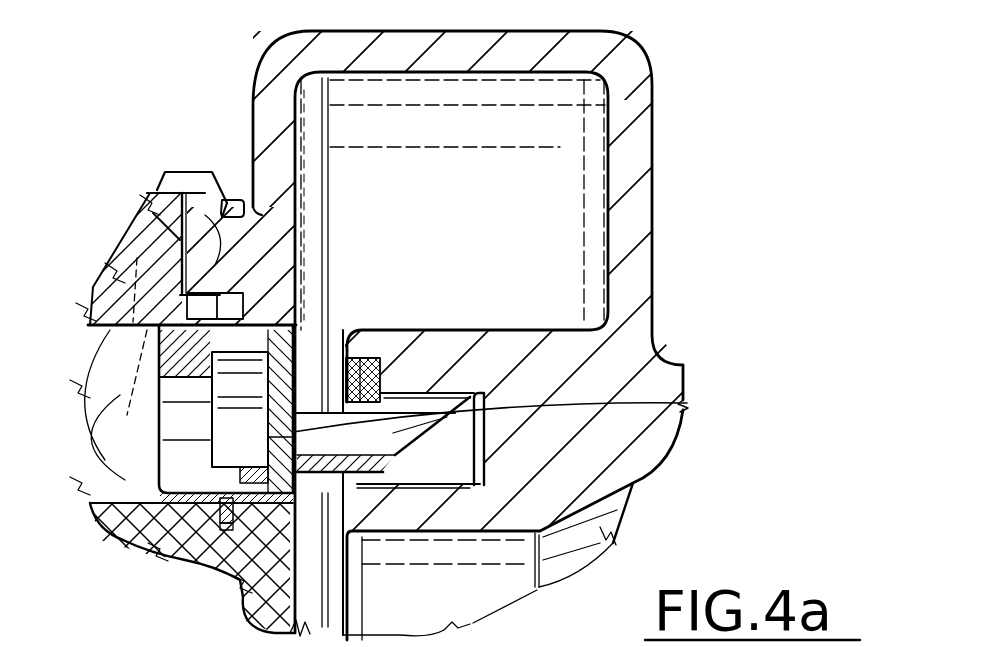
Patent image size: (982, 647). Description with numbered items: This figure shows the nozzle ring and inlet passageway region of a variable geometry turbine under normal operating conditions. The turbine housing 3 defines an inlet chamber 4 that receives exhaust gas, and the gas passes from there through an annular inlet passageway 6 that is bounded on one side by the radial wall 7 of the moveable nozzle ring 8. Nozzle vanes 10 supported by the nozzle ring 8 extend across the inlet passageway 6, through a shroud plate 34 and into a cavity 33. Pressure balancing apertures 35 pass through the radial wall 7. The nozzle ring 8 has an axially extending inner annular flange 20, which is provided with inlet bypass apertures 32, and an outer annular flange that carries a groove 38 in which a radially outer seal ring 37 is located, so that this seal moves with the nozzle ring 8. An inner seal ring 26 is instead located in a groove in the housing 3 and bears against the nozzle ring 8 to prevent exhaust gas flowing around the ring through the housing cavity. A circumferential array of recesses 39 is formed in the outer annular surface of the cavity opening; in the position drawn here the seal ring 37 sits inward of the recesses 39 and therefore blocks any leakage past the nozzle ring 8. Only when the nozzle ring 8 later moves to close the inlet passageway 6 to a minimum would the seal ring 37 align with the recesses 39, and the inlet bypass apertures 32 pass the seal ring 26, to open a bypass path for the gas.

The turbine housing 3 is at (550, 32).
The inlet chamber 4 is at (510, 173).
The inlet passageway 6 is at (343, 343).
The radial wall 7 is at (330, 347).
The nozzle ring 8 is at (160, 393).
The nozzle vanes 10 is at (676, 404).
The inner annular flange 20 is at (142, 540).
The seal ring 26 is at (187, 562).
The inlet bypass apertures 32 is at (157, 472).
The cavity 33 is at (473, 480).
The shroud plate 34 is at (355, 343).
The pressure balancing apertures 35 is at (480, 393).
The outer seal ring 37 is at (158, 348).
The groove 38 is at (302, 335).
The recesses 39 is at (183, 250).